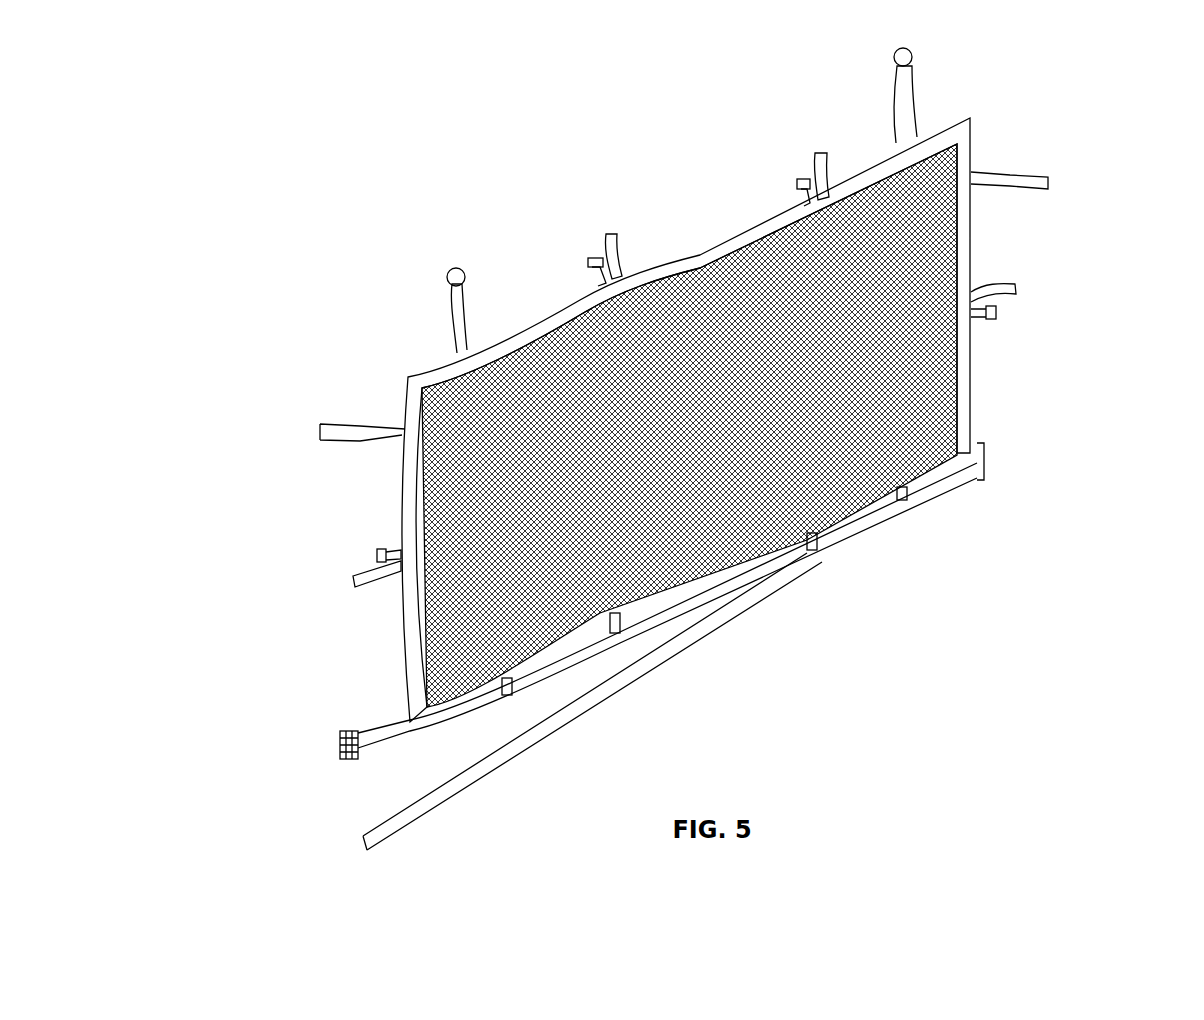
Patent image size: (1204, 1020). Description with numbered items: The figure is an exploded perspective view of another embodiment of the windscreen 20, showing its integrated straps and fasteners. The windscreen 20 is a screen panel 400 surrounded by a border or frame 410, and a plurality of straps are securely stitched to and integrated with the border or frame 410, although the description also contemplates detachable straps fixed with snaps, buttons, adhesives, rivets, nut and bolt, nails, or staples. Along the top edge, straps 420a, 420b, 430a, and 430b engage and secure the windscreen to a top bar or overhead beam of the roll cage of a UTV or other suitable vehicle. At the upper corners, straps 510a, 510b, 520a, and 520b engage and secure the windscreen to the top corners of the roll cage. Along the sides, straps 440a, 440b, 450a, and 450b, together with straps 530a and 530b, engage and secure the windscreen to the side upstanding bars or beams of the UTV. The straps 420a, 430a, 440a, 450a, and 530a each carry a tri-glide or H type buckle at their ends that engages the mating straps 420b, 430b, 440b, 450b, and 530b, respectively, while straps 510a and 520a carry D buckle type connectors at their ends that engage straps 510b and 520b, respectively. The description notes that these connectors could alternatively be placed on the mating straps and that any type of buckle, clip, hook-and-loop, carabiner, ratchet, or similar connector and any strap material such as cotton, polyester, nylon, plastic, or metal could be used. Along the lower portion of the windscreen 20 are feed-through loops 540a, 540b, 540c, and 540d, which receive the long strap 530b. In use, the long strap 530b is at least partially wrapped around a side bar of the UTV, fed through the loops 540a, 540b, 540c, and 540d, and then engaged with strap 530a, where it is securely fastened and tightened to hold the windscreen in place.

The windscreen 20 is at (362, 158).
The mesh panel 400 is at (930, 212).
The border or frame 410 is at (720, 243).
The strap 420a is at (590, 259).
The strap 420b is at (613, 233).
The strap 430a is at (800, 180).
The strap 430b is at (815, 155).
The strap 440a is at (378, 553).
The strap 440b is at (356, 582).
The strap 450a is at (997, 314).
The strap 450b is at (1016, 288).
The strap 510a is at (455, 300).
The strap 510b is at (332, 425).
The strap 520a is at (905, 82).
The strap 520b is at (1047, 176).
The strap 530a is at (343, 745).
The long strap 530b is at (370, 833).
The feed-through loop 540a is at (905, 500).
The feed-through loop 540b is at (815, 550).
The feed-through loop 540c is at (617, 633).
The feed-through loop 540d is at (510, 695).